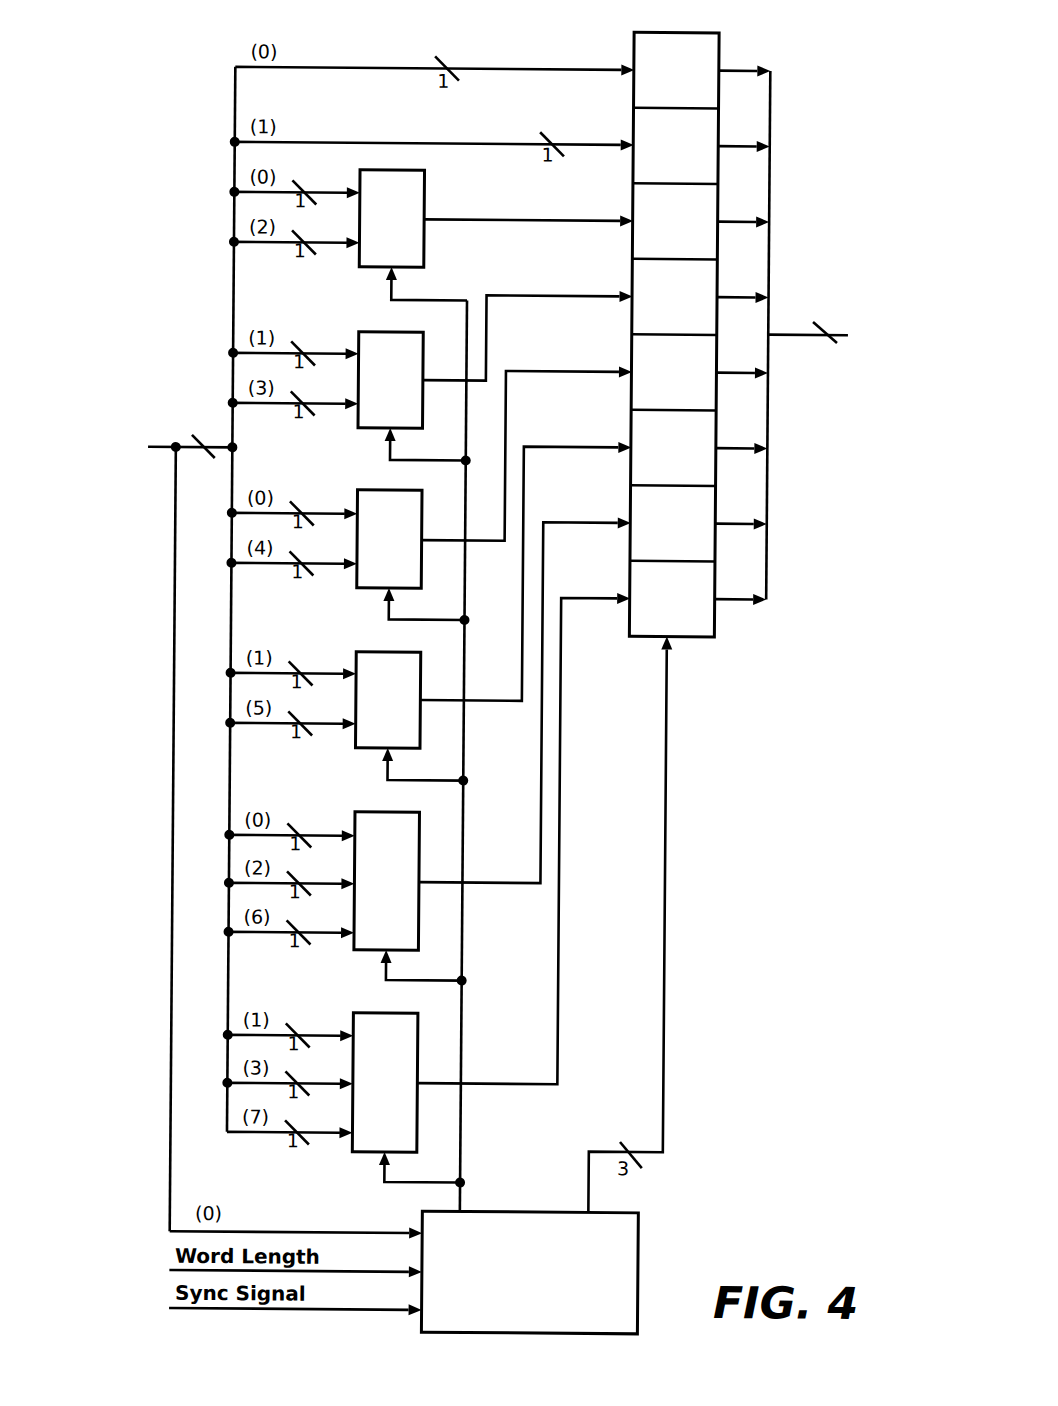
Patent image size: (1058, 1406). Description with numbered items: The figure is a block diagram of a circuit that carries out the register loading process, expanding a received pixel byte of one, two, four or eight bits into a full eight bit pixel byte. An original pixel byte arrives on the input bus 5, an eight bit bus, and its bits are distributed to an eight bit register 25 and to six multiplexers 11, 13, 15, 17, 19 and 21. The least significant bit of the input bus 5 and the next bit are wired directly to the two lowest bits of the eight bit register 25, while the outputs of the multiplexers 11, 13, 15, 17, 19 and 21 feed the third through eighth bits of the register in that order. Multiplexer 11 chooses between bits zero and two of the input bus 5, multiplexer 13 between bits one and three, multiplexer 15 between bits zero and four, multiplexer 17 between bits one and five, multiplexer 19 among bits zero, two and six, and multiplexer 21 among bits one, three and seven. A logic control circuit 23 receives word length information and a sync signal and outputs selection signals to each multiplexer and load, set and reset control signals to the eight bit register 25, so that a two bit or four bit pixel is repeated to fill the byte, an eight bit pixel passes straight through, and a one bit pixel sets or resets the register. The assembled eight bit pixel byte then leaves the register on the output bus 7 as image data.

The input bus 5 is at (162, 450).
The image data output bus 7 is at (785, 332).
The multiplexer 11 is at (424, 187).
The multiplexer 13 is at (373, 333).
The multiplexer 15 is at (373, 491).
The multiplexer 17 is at (377, 653).
The multiplexer 19 is at (378, 813).
The multiplexer 21 is at (376, 1014).
The logic control circuit 23 is at (645, 1242).
The eight bit register 25 is at (675, 31).